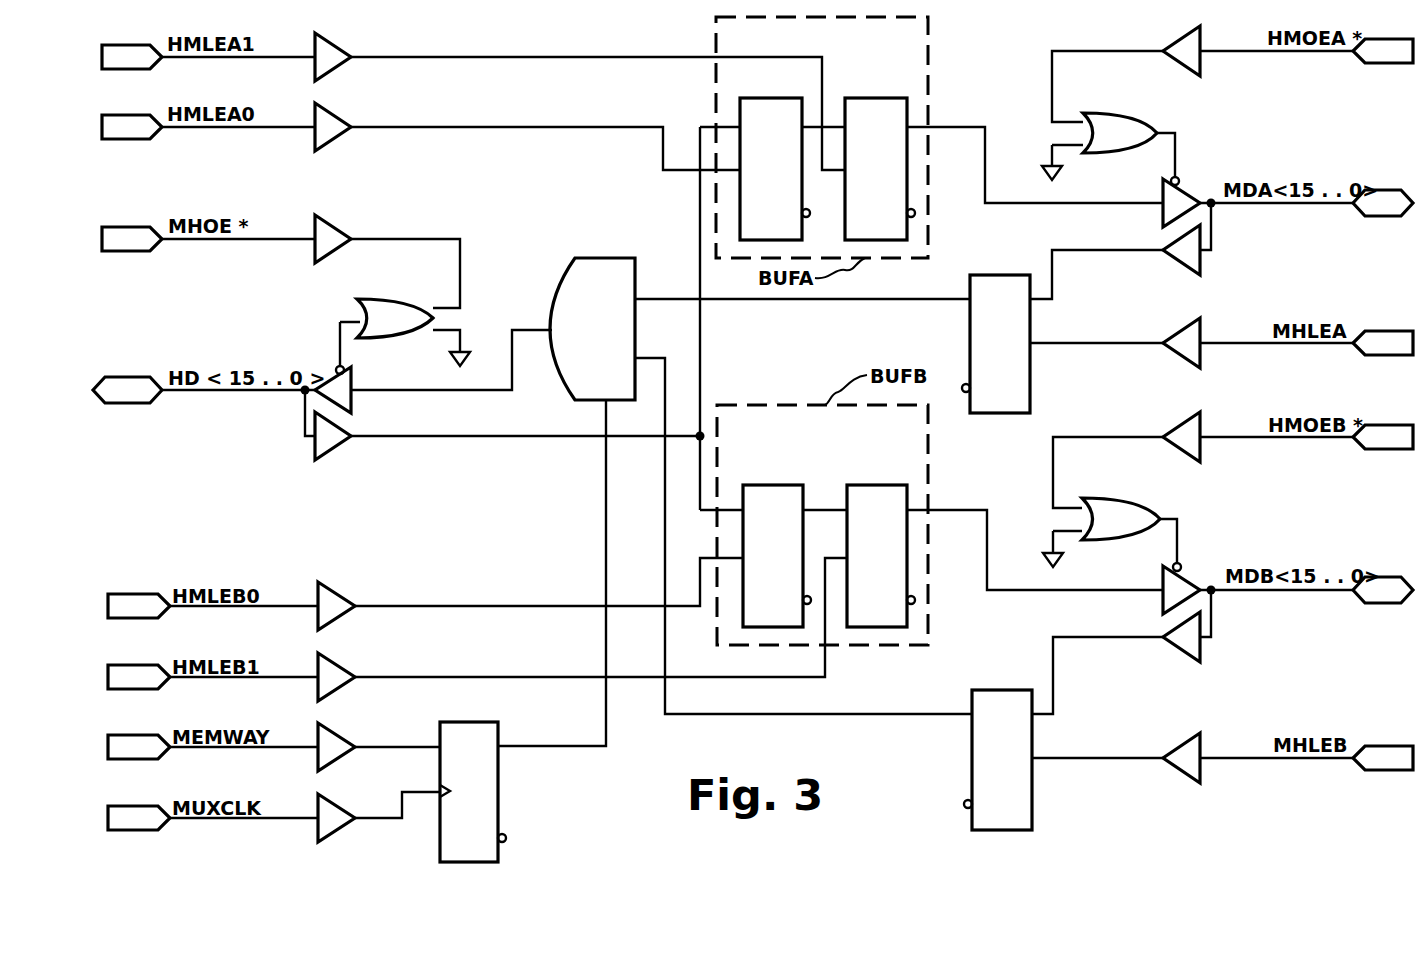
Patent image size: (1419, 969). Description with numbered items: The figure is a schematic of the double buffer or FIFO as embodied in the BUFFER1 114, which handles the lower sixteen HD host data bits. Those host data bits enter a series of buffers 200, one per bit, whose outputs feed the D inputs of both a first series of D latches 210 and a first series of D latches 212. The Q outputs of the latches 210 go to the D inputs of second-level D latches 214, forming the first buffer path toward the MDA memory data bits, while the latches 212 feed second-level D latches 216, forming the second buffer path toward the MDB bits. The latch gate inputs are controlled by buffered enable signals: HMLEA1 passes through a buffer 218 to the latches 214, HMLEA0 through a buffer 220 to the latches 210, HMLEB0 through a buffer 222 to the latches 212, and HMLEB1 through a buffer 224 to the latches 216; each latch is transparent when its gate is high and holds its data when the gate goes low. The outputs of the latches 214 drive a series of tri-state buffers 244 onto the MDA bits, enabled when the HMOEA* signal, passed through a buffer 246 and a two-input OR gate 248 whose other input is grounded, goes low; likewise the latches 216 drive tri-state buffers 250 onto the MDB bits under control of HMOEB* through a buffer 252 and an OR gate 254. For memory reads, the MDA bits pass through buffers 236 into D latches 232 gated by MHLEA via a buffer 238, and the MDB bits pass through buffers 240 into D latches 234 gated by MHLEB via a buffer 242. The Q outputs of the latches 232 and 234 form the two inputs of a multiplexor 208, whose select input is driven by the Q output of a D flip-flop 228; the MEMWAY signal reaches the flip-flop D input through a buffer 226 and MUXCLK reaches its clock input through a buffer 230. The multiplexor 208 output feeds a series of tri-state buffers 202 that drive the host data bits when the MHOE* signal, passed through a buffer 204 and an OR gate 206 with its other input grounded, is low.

The BUFFER1 114 is at (972, 31).
The buffer 200 is at (343, 452).
The tri-state buffer 202 is at (355, 396).
The buffer 204 is at (333, 225).
The two-input OR gate 206 is at (378, 299).
The multiplexor 208 is at (610, 258).
The D latch 210 is at (740, 108).
The D latch 212 is at (757, 485).
The D latch 214 is at (868, 98).
The D latch 216 is at (868, 485).
The buffer 218 is at (335, 45).
The buffer 220 is at (335, 115).
The buffer 222 is at (340, 592).
The buffer 224 is at (342, 662).
The buffer 226 is at (342, 733).
The D flip-flop 228 is at (498, 724).
The buffer 230 is at (345, 804).
The D latch 232 is at (1032, 358).
The D latch 234 is at (1034, 782).
The buffer 236 is at (1200, 262).
The buffer 238 is at (1200, 355).
The buffer 240 is at (1200, 648).
The buffer 242 is at (1200, 770).
The tri-state buffer 244 is at (1188, 192).
The buffer 246 is at (1200, 62).
The two-input OR gate 248 is at (1140, 116).
The tri-state buffer 250 is at (1191, 578).
The buffer 252 is at (1200, 448).
The two-input OR gate 254 is at (1142, 501).